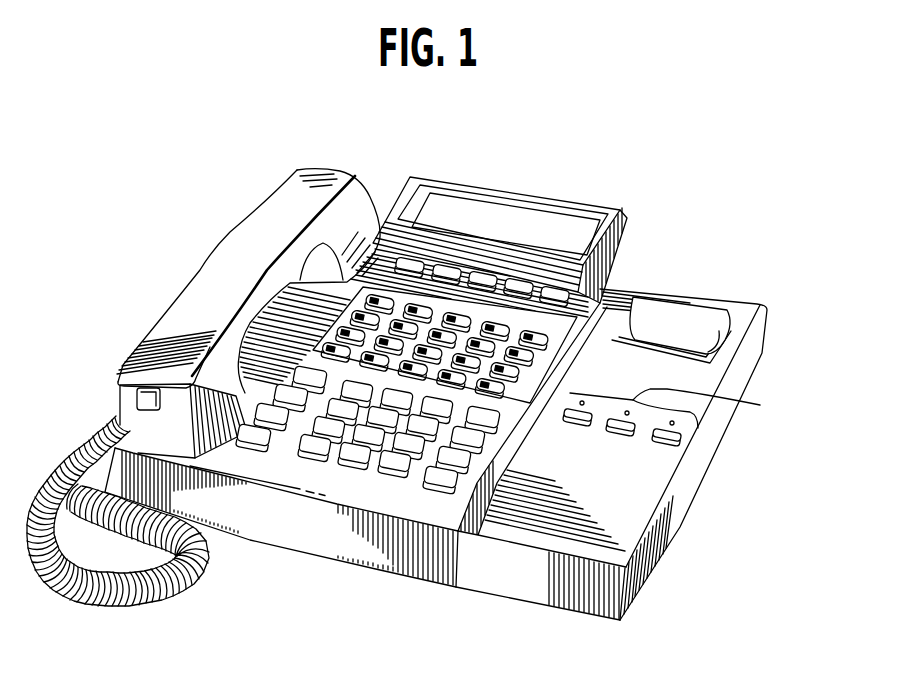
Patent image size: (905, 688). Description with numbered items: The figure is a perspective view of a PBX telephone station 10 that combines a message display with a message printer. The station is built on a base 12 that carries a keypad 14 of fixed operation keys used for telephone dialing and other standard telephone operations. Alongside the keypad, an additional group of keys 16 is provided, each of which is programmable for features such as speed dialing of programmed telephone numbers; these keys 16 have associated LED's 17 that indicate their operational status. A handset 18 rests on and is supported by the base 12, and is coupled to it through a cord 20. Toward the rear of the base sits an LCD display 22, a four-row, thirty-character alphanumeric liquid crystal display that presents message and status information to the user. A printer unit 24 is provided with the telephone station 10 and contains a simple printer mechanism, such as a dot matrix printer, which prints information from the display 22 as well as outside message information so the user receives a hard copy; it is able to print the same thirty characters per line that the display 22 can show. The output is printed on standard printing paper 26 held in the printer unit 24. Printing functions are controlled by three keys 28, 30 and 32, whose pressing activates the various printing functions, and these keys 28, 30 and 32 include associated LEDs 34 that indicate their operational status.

The PBX telephone station 10 is at (255, 575).
The base 12 is at (433, 588).
The keypad 14 is at (352, 474).
The group of keys 16 is at (505, 313).
The LED's 17 is at (486, 312).
The handset 18 is at (261, 221).
The cord 20 is at (103, 607).
The LCD display 22 is at (535, 228).
The printer unit 24 is at (778, 350).
The printing paper 26 is at (683, 315).
The key 28 is at (571, 425).
The key 30 is at (613, 433).
The key 32 is at (667, 444).
The LEDs 34 is at (700, 397).